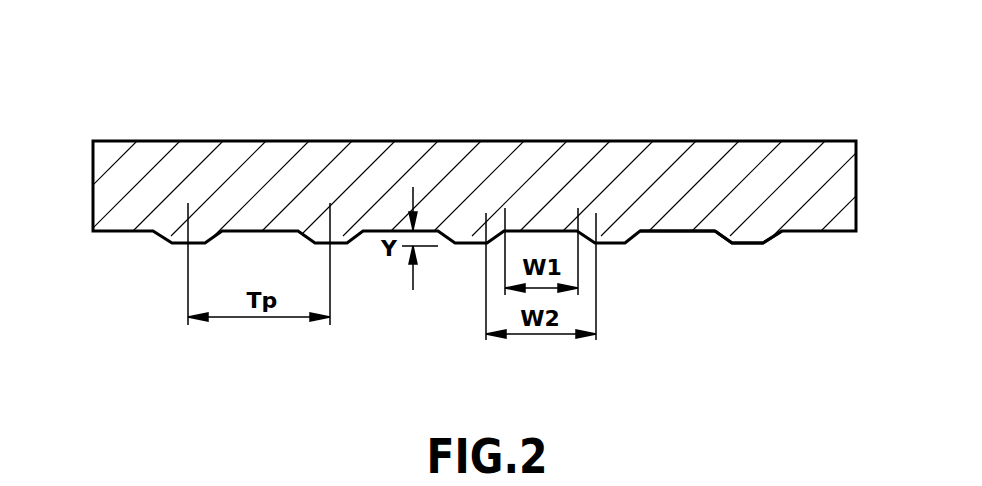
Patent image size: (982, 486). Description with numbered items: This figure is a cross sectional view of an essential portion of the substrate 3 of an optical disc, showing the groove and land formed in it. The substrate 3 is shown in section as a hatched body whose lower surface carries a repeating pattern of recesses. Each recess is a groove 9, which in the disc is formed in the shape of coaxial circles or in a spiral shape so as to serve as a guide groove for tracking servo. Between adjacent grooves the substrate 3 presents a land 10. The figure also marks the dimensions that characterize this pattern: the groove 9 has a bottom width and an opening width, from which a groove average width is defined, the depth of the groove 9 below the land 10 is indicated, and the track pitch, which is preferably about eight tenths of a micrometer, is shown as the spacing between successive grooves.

The substrate 3 is at (708, 148).
The groove 9 is at (669, 232).
The land 10 is at (750, 243).